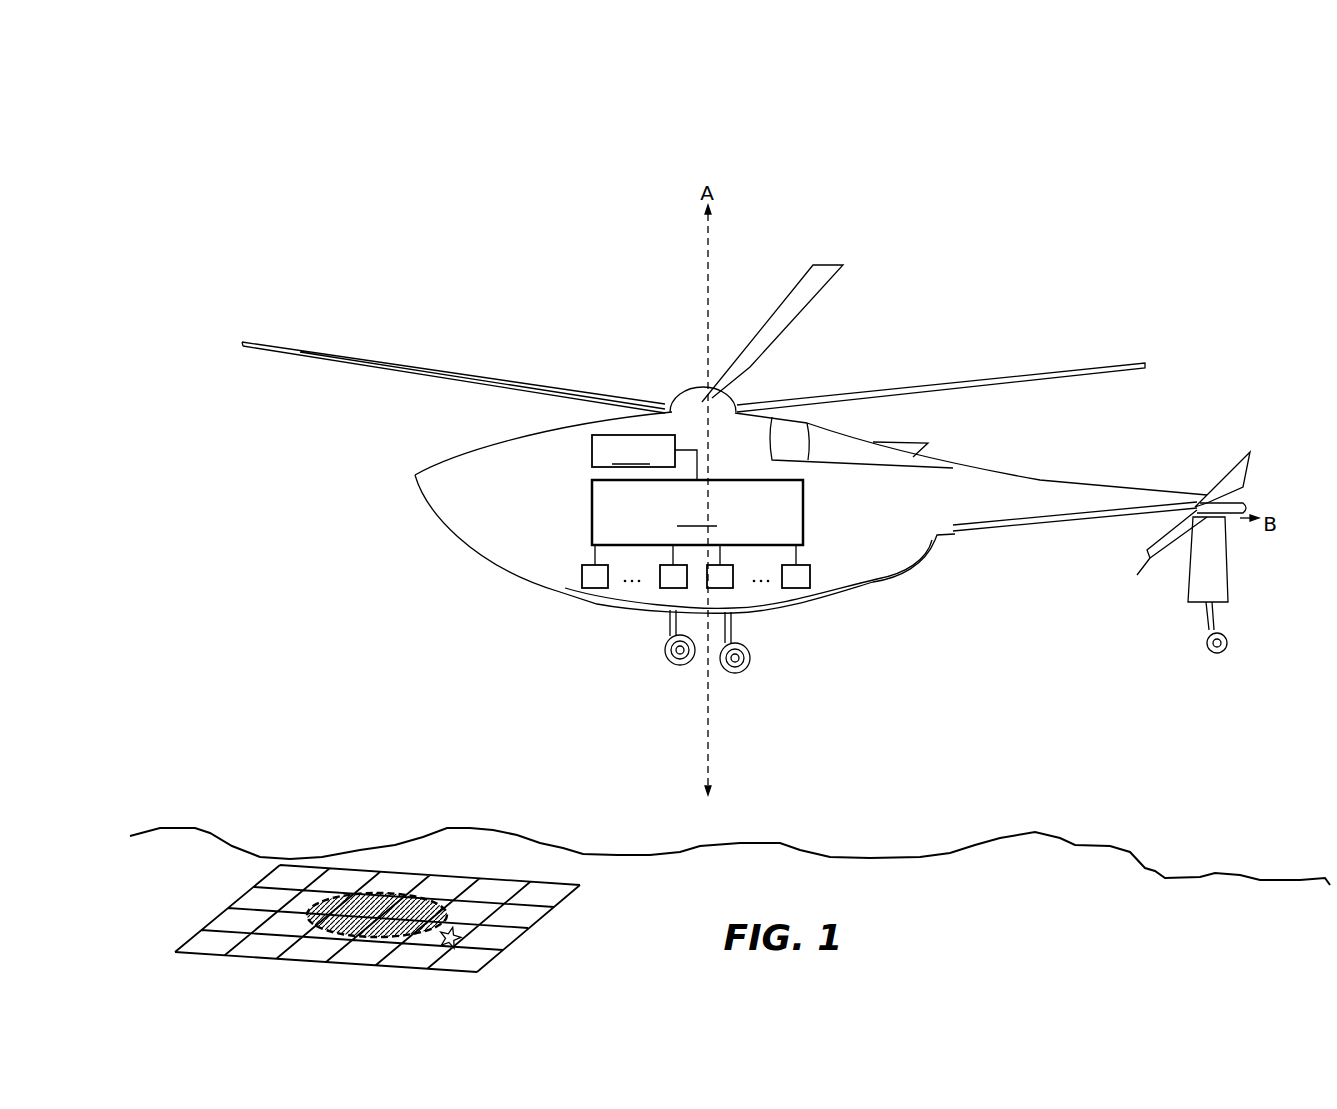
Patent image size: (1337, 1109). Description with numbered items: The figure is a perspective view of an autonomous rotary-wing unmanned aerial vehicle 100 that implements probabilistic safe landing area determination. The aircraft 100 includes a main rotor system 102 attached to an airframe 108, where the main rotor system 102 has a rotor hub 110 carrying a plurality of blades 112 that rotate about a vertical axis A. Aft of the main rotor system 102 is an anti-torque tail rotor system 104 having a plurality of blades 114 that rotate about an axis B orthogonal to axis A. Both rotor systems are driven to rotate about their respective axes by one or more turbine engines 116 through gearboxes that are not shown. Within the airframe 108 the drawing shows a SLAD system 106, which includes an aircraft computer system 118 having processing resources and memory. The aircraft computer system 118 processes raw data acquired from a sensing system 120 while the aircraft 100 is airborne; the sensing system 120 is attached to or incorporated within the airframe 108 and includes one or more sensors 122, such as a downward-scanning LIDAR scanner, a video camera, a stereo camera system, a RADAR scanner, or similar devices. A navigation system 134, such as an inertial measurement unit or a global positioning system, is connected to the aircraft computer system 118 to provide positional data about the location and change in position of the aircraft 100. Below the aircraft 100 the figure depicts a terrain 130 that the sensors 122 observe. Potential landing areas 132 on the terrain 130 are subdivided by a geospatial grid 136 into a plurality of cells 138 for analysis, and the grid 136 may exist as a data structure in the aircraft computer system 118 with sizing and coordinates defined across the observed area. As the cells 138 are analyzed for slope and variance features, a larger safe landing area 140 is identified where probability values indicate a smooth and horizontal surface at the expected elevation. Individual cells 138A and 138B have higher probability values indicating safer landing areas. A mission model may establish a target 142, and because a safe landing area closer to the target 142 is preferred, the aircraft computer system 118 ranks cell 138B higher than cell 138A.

The autonomous rotary-wing unmanned aerial vehicle 100 is at (451, 137).
The main rotor system 102 is at (626, 327).
The tail rotor system 104 is at (1212, 422).
The SLAD system 106 is at (572, 492).
The airframe 108 is at (973, 520).
The rotor hub 110 is at (677, 395).
The blades 112 is at (985, 380).
The blades 114 is at (1183, 529).
The turbine engines 116 is at (788, 448).
The aircraft computer system 118 is at (697, 512).
The sensing system 120 is at (557, 549).
The sensors 122 is at (553, 586).
The terrain 130 is at (988, 888).
The potential landing areas 132 is at (566, 858).
The navigation system 134 is at (644, 457).
The geospatial grid 136 is at (543, 917).
The cells 138 is at (501, 852).
The cell 138A is at (365, 898).
The cell 138B is at (397, 897).
The safe landing area 140 is at (338, 921).
The target 142 is at (445, 948).